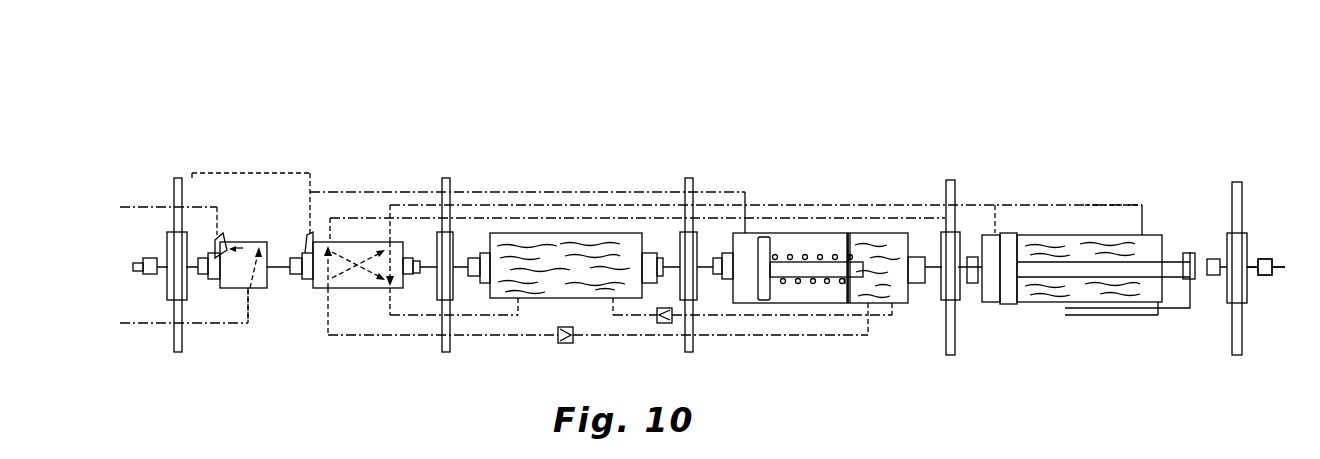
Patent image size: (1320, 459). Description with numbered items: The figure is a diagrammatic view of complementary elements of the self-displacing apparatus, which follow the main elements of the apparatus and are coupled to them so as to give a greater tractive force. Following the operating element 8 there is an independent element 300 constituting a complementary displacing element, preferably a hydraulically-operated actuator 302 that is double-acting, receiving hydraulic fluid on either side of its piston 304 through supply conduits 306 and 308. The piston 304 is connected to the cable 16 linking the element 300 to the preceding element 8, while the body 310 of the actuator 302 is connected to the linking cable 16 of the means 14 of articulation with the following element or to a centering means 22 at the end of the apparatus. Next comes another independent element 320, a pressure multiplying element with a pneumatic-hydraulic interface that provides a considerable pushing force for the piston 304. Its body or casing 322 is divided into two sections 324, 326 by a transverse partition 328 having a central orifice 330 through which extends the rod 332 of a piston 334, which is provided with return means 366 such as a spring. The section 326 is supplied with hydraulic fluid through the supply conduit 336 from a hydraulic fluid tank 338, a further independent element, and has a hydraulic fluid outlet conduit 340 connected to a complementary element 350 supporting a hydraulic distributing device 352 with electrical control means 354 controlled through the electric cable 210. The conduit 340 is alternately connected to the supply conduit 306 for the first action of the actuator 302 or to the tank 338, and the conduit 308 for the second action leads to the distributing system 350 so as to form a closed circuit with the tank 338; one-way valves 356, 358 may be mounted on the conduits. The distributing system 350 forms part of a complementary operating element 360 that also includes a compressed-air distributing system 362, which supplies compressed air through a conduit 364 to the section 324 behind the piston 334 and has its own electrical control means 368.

The operating element 8 is at (1270, 253).
The means of articulation 14 is at (965, 313).
The cable 16 is at (940, 301).
The centering means 22 is at (168, 346).
The electric cable 210 is at (215, 168).
The independent element 300 is at (1170, 222).
The hydraulically-operated actuator 302 is at (1050, 303).
The piston 304 is at (1106, 268).
The supply conduit 306 is at (994, 228).
The supply conduit 308 is at (1088, 208).
The body 310 is at (983, 303).
The pressure multiplying element 320 is at (838, 150).
The body or casing 322 is at (840, 302).
The section 324 is at (798, 292).
The section 326 is at (869, 285).
The transverse partition 328 is at (852, 290).
The central orifice 330 is at (853, 260).
The rod 332 is at (847, 272).
The piston 334 is at (763, 259).
The supply conduit 336 is at (727, 316).
The hydraulic fluid tank 338 is at (586, 298).
The hydraulic fluid outlet conduit 340 is at (414, 338).
The complementary element 350 is at (338, 233).
The hydraulic distributing device 352 is at (314, 292).
The electrical control means 354 is at (316, 232).
The one-way valve 356 is at (660, 324).
The one-way valve 358 is at (556, 335).
The complementary operating element 360 is at (281, 133).
The compressed-air distributing system 362 is at (236, 240).
The conduit 364 is at (221, 323).
The return means 366 is at (807, 255).
The electrical control means 368 is at (226, 238).